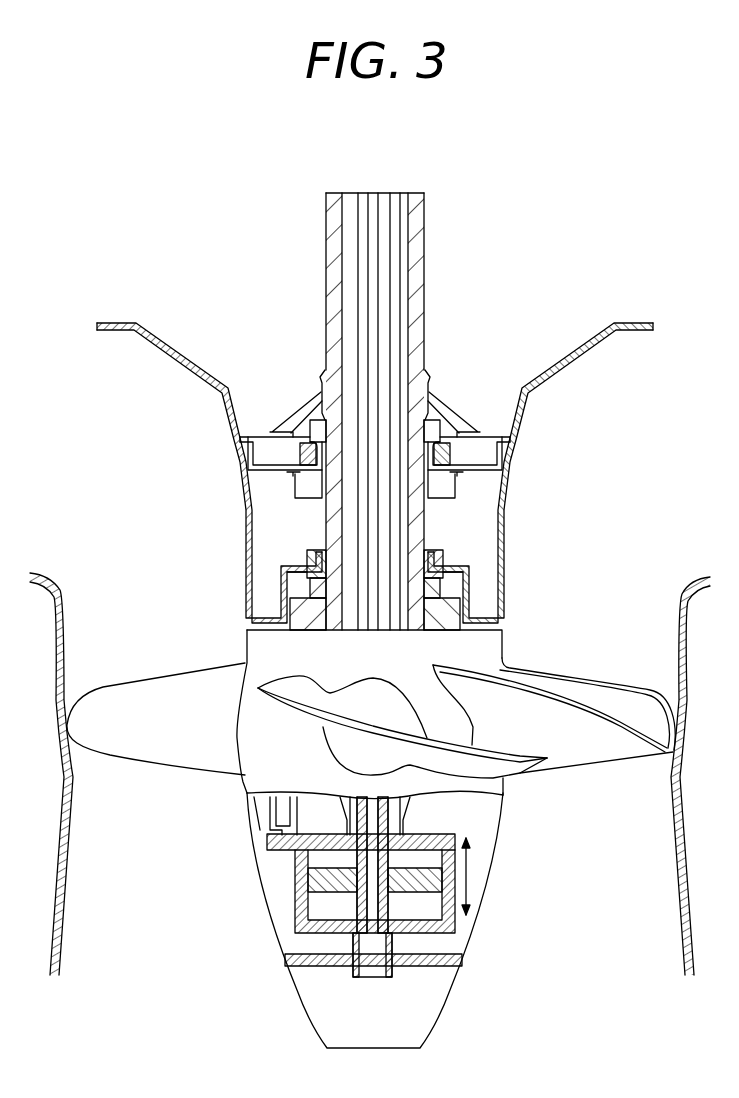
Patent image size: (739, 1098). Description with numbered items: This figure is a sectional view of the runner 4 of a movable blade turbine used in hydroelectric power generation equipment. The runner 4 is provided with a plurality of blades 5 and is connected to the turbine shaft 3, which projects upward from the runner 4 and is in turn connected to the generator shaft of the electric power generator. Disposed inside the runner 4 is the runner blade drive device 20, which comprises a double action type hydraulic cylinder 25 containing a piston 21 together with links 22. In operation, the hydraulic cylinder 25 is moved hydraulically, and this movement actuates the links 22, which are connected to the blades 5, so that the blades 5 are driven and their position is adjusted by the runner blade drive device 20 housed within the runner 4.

The turbine shaft 3 is at (413, 252).
The runner 4 is at (448, 998).
The blades 5 is at (157, 770).
The runner blade drive device 20 is at (470, 838).
The piston 21 is at (412, 887).
The links 22 is at (268, 808).
The double action type hydraulic cylinder 25 is at (433, 838).